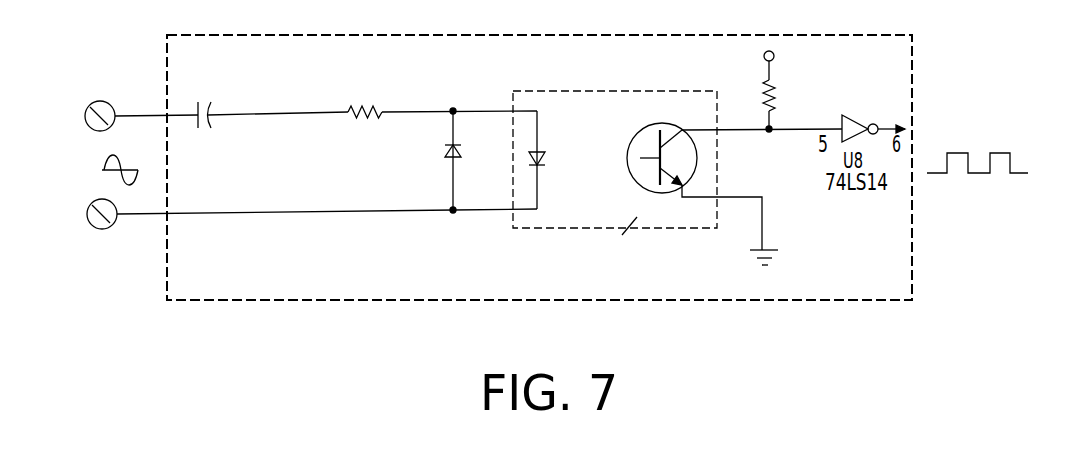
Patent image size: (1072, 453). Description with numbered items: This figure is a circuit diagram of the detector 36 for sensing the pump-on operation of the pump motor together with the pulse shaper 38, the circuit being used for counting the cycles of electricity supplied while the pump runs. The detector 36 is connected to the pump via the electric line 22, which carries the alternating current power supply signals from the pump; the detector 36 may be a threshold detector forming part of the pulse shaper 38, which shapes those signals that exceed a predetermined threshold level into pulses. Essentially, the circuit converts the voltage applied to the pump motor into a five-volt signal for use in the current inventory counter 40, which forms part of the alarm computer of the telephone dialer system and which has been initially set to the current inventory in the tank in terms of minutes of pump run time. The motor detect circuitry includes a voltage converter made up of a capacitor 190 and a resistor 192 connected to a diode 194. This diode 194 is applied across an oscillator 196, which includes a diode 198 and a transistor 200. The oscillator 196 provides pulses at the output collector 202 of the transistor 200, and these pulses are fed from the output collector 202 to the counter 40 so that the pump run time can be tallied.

The electric line 22 is at (82, 105).
The detector 36 is at (437, 285).
The pulse shaper 38 is at (539, 167).
The current inventory counter 40 is at (977, 133).
The capacitor 190 is at (207, 105).
The resistor 192 is at (380, 105).
The diode 194 is at (458, 143).
The oscillator 196 is at (543, 90).
The diode 198 is at (542, 153).
The transistor 200 is at (650, 125).
The output collector 202 is at (790, 130).